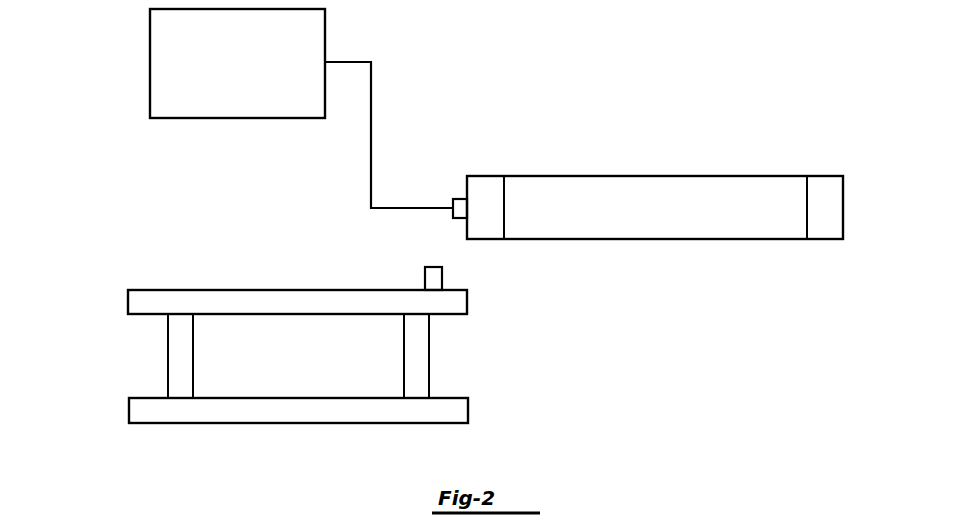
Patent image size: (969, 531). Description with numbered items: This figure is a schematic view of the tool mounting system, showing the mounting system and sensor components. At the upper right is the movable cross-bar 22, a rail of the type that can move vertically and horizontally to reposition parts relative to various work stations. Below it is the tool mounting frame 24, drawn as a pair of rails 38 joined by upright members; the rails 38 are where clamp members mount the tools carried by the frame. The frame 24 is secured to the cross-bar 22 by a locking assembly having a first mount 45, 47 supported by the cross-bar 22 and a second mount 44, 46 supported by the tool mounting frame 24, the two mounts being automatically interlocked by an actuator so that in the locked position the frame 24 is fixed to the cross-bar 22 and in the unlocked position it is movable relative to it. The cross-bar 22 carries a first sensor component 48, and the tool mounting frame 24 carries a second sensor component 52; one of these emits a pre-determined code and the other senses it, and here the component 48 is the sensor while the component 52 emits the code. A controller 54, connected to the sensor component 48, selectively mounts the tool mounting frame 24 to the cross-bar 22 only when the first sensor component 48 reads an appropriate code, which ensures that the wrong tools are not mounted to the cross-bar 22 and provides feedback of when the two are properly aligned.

The cross-bar 22 is at (662, 180).
The tool mounting frame 24 is at (283, 361).
The rails 38 is at (292, 301).
The second mount 44 is at (415, 362).
The first mount 45 is at (822, 186).
The second mount 46 is at (180, 353).
The first mount 47 is at (488, 192).
The first sensor component 48 is at (460, 200).
The second sensor component 52 is at (440, 276).
The controller 54 is at (220, 76).